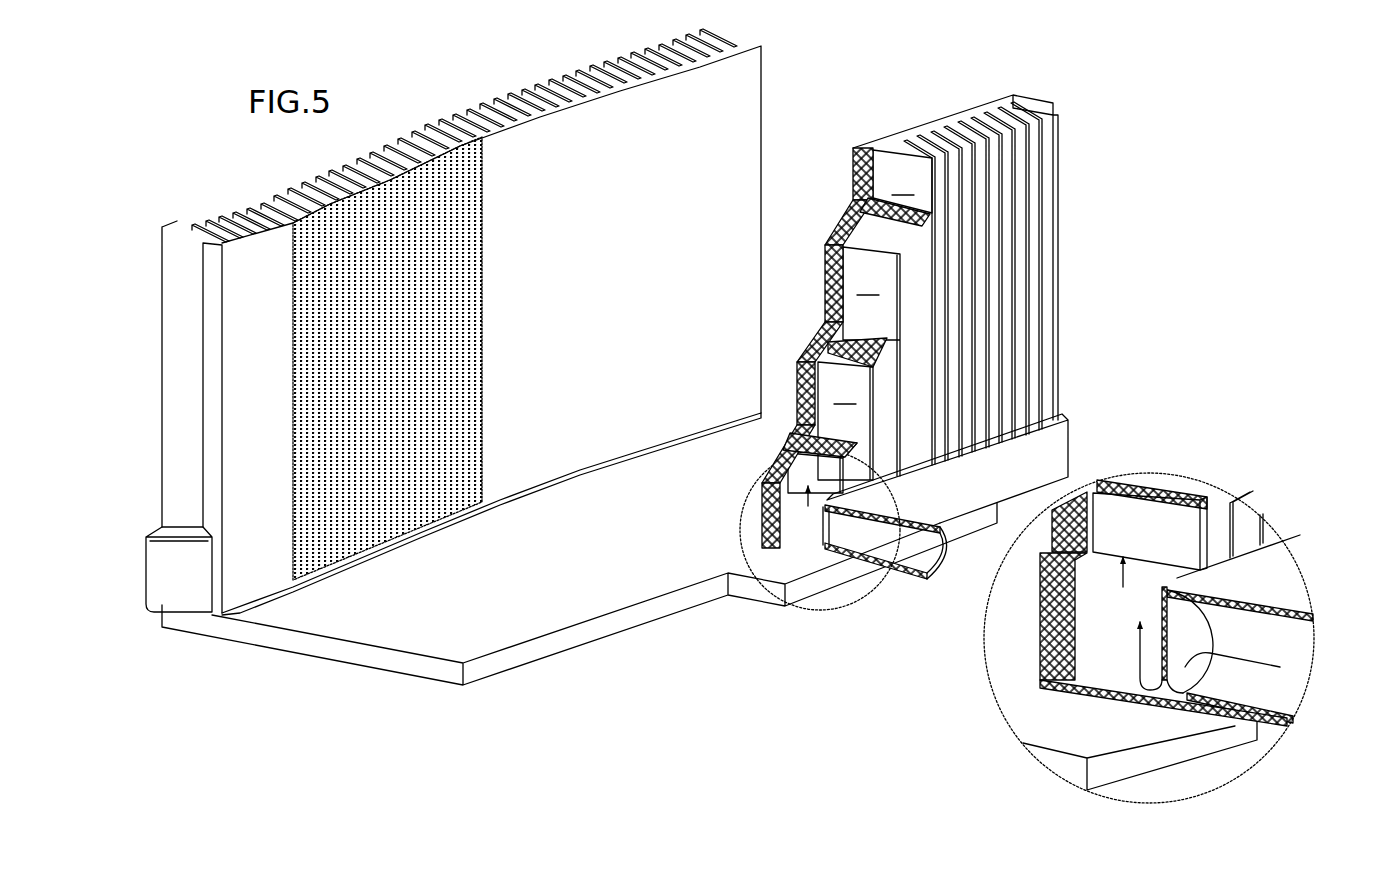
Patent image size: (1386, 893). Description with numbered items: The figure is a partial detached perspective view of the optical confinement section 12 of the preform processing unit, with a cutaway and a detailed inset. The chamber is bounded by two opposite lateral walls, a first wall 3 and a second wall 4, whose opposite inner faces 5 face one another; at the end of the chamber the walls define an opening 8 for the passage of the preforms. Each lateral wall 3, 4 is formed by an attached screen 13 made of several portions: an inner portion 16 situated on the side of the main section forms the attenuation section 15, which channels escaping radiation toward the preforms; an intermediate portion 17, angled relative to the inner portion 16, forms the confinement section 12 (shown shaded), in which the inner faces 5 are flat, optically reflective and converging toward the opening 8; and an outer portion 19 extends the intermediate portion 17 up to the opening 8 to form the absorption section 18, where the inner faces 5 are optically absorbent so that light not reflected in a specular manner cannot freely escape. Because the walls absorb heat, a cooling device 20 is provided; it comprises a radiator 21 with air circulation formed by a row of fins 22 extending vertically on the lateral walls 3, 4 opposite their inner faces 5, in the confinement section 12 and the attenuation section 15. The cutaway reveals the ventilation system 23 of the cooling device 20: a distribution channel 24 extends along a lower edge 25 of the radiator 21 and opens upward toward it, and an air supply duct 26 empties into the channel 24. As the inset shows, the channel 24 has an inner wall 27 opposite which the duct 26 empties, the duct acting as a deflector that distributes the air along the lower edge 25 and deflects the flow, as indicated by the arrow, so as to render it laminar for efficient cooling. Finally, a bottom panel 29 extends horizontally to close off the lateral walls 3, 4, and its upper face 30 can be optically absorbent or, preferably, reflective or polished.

The first wall 3 is at (601, 320).
The attached screen 13 is at (601, 320).
The inner face 5 is at (722, 145).
The second wall 4 is at (1003, 102).
The opening 8 is at (210, 412).
The optical confinement section 12 is at (397, 358).
The intermediate portion 17 is at (396, 490).
The attenuation section 15 is at (491, 515).
The inner portion 16 is at (491, 515).
The absorption section 18 is at (491, 517).
The outer portion 19 is at (254, 562).
The cooling device 20 is at (1024, 398).
The radiator 21 is at (1024, 398).
The fins 22 is at (1010, 283).
The ventilation system 23 is at (1072, 440).
The distribution channel 24 is at (192, 594).
The lower edge 25 is at (954, 542).
The air supply duct 26 is at (905, 521).
The inner wall 27 is at (822, 534).
The bottom panel 29 is at (709, 648).
The upper face 30 is at (499, 639).